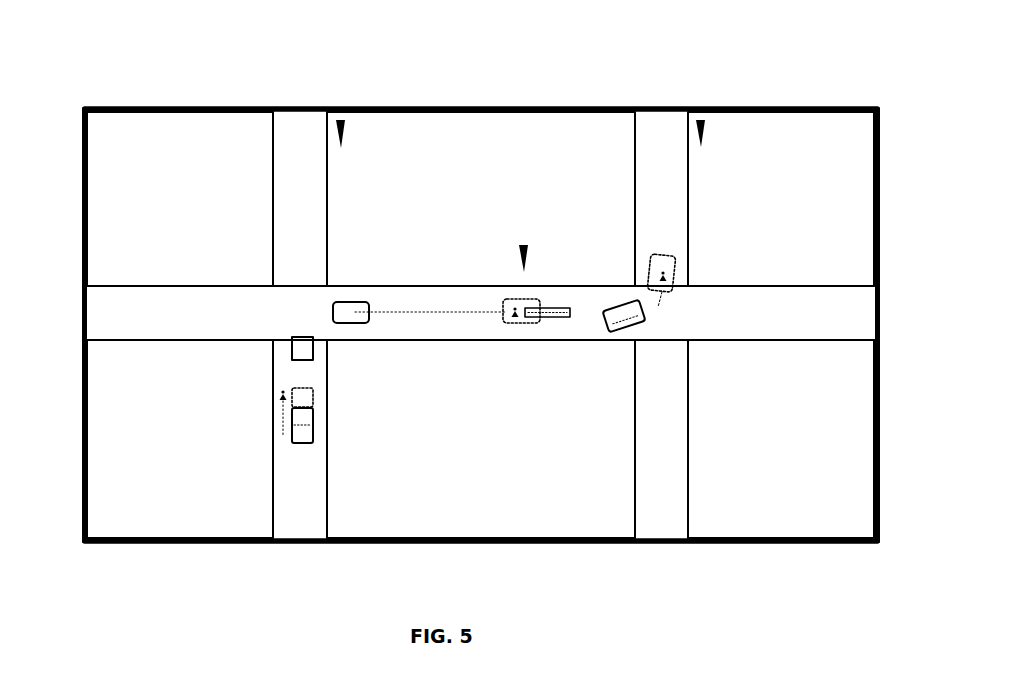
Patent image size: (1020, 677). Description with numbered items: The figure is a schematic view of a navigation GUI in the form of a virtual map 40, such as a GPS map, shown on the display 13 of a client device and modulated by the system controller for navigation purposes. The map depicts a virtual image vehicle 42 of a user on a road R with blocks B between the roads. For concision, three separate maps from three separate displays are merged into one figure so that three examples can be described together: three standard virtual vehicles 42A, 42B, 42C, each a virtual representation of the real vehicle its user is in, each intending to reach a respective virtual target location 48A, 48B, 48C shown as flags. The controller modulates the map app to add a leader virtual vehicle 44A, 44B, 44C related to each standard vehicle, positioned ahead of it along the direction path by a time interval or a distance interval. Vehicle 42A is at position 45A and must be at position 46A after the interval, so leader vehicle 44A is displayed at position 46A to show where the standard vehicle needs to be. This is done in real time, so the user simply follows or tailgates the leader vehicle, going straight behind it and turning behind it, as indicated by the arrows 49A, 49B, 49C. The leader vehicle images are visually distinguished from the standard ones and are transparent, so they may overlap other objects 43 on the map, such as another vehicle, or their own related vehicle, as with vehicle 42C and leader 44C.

The virtual map 40 is at (112, 140).
The display 13 is at (76, 208).
The blocks B is at (862, 170).
The road R is at (300, 163).
The virtual image vehicle 42 is at (296, 343).
The standard virtual vehicle 42A is at (352, 318).
The standard virtual vehicle 42B is at (607, 318).
The standard virtual vehicle 42C is at (318, 435).
The other object 43 is at (572, 313).
The leader virtual vehicle 44A is at (522, 323).
The leader virtual vehicle 44B is at (672, 262).
The leader virtual vehicle 44C is at (288, 392).
The position 45A is at (361, 284).
The position 46A is at (539, 285).
The virtual target location 48A is at (518, 258).
The virtual target location 48B is at (706, 127).
The virtual target location 48C is at (346, 125).
The arrow 49A is at (453, 312).
The arrow 49B is at (656, 308).
The arrow 49C is at (282, 412).